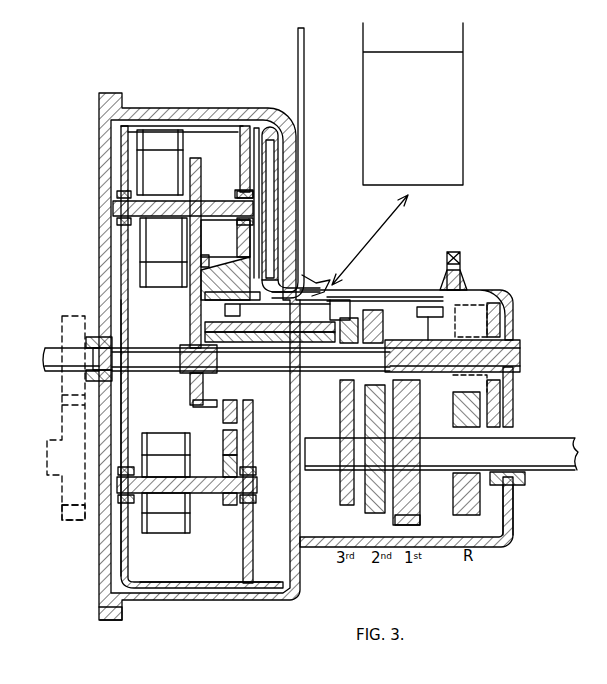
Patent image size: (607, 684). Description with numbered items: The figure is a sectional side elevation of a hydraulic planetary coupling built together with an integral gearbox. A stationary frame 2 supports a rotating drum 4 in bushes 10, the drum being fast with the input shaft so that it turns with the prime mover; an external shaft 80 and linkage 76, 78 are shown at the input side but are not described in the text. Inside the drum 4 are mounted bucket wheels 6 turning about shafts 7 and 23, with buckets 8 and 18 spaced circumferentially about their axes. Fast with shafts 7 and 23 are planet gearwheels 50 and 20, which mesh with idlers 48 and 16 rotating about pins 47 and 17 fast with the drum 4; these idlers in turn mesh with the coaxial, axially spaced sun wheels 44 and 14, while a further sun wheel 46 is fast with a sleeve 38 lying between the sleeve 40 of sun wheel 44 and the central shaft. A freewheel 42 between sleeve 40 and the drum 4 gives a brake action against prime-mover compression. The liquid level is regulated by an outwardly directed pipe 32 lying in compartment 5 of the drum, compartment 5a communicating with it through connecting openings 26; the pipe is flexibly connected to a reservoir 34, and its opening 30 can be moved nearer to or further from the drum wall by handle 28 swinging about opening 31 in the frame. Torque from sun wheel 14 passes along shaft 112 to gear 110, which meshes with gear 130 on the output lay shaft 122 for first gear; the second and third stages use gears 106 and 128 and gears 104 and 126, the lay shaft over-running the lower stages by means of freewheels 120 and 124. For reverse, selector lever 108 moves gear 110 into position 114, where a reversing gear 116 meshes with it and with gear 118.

The frame 2 is at (108, 598).
The drum 4 is at (120, 565).
The compartment 5 is at (298, 580).
The compartment 5a is at (192, 578).
The bucket wheel 6 is at (142, 520).
The shaft 7 is at (207, 496).
The bucket 8 is at (163, 446).
The bush 10 is at (120, 373).
The sun wheel 14 is at (196, 395).
The idler 16 is at (207, 262).
The pin 17 is at (214, 286).
The bucket 18 is at (166, 272).
The planet gearwheel 20 is at (200, 242).
The shaft 23 is at (160, 206).
The connecting opening 26 is at (243, 140).
The handle 28 is at (305, 108).
The opening 30 is at (258, 125).
The opening 31 is at (310, 276).
The pipe 32 is at (272, 182).
The reservoir 34 is at (463, 72).
The sleeve 38 is at (370, 295).
The sleeve 40 is at (345, 290).
The freewheel 42 is at (205, 300).
The sun wheel 44 is at (228, 316).
The sun wheel 46 is at (225, 330).
The pin 47 is at (224, 437).
The idler 48 is at (224, 462).
The planet gearwheel 50 is at (236, 505).
The lever 76 is at (53, 512).
The link 78 is at (55, 462).
The input shaft 80 is at (62, 382).
The gear 104 is at (403, 285).
The gear 106 is at (410, 300).
The selector lever 108 is at (458, 290).
The gear 110 is at (500, 305).
The shaft 112 is at (380, 355).
The position 114 is at (518, 322).
The reversing gear 116 is at (500, 412).
The gear 118 is at (494, 430).
The freewheel 120 is at (428, 432).
The output lay shaft 122 is at (535, 450).
The freewheel 124 is at (365, 432).
The gear 126 is at (524, 485).
The gear 128 is at (518, 508).
The gear 130 is at (412, 519).